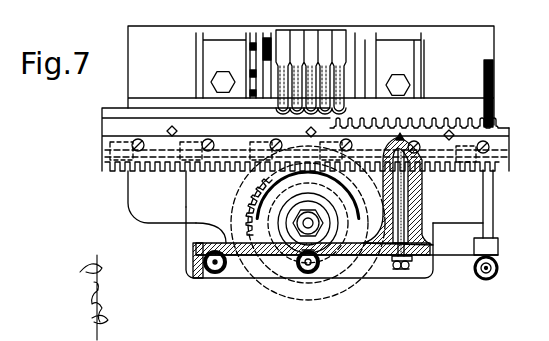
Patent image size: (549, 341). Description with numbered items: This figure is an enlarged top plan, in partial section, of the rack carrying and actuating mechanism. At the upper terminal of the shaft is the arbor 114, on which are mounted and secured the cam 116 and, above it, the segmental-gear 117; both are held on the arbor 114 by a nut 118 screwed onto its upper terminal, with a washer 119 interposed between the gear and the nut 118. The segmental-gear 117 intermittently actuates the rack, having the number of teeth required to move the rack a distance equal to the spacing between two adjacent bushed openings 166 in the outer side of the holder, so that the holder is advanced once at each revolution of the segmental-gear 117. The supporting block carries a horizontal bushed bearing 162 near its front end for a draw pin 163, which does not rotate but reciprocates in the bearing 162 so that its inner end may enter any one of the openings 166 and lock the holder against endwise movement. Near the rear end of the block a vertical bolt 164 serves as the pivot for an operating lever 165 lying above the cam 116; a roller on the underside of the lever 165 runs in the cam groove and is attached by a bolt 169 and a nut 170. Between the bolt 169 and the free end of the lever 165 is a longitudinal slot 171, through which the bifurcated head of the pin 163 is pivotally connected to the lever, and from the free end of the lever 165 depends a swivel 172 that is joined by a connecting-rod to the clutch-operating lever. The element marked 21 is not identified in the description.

The housing 21 is at (496, 33).
The bushed openings 166 is at (410, 147).
The arbor 114 is at (303, 222).
The segmental-gear 117 is at (347, 214).
The nut 118 is at (310, 214).
The washer 119 is at (290, 230).
The cam 116 is at (293, 280).
The bushed bearing 162 is at (416, 257).
The draw pin 163 is at (401, 214).
The vertical bolt 164 is at (215, 272).
The operating lever 165 is at (370, 262).
The bolt 169 is at (311, 274).
The nut 170 is at (305, 273).
The longitudinal slot 171 is at (401, 268).
The swivel 172 is at (399, 270).